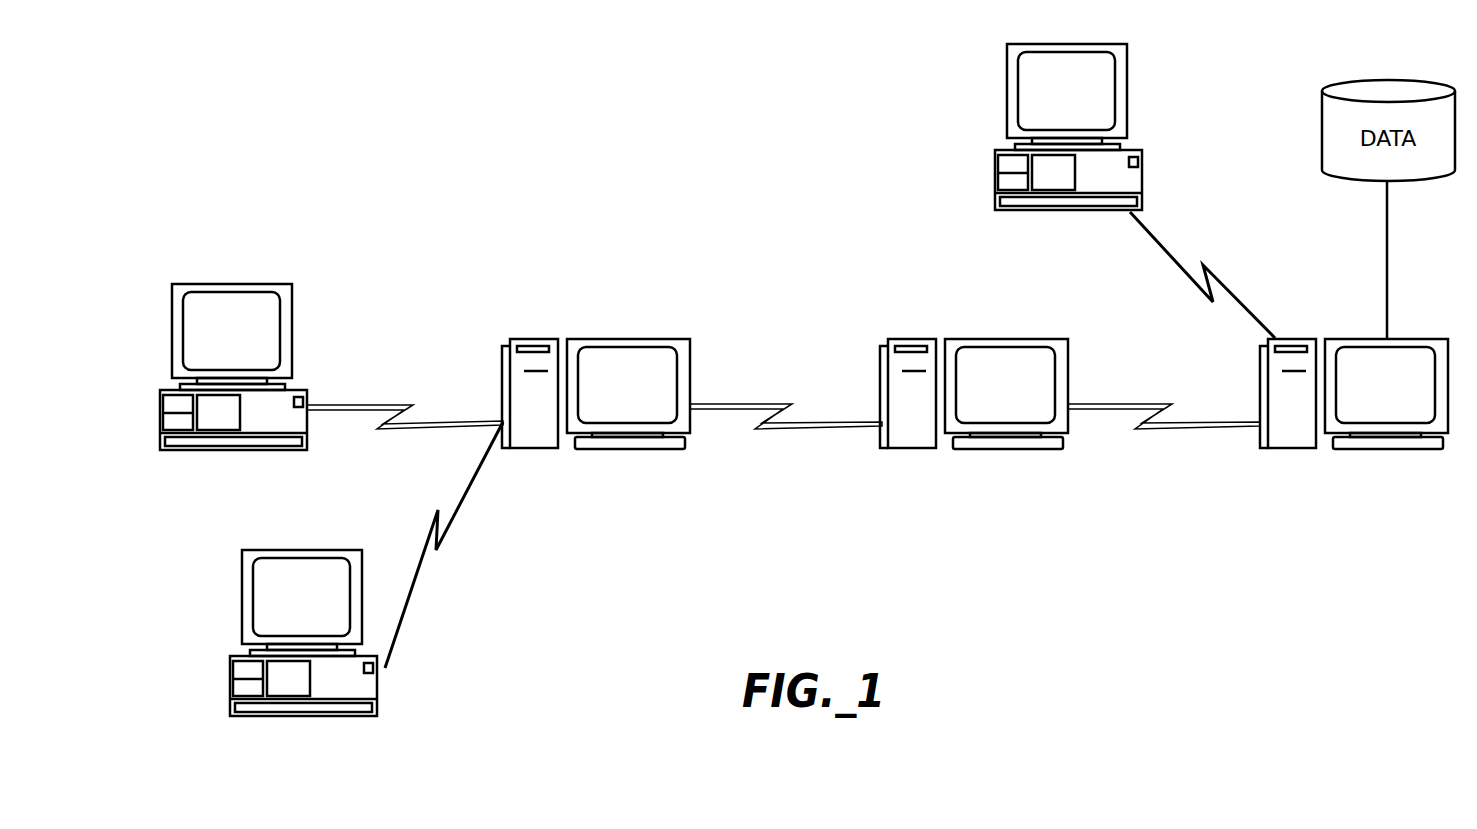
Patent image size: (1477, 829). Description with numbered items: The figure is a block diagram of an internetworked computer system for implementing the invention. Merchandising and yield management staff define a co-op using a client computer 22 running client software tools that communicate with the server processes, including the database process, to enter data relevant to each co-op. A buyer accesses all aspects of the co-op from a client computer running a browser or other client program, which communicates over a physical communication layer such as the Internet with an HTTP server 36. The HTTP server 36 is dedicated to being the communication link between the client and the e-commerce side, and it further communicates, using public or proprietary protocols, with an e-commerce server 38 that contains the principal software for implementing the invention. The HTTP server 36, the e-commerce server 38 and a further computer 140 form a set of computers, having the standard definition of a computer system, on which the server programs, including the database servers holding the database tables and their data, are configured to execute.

The client computer 22 is at (1130, 150).
The HTTP server 36 is at (528, 339).
The e-commerce server 38 is at (906, 339).
The computer 140 is at (1291, 339).